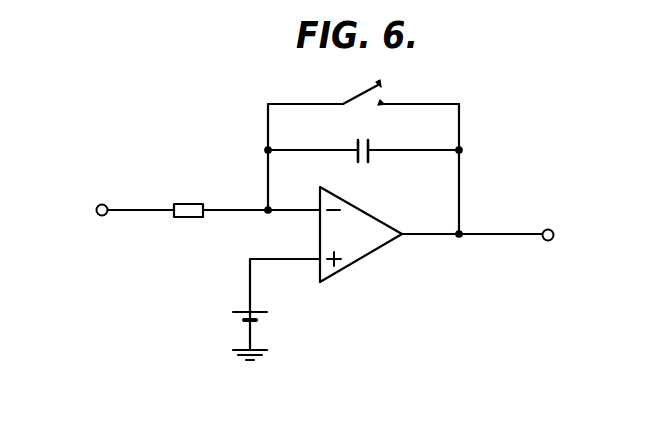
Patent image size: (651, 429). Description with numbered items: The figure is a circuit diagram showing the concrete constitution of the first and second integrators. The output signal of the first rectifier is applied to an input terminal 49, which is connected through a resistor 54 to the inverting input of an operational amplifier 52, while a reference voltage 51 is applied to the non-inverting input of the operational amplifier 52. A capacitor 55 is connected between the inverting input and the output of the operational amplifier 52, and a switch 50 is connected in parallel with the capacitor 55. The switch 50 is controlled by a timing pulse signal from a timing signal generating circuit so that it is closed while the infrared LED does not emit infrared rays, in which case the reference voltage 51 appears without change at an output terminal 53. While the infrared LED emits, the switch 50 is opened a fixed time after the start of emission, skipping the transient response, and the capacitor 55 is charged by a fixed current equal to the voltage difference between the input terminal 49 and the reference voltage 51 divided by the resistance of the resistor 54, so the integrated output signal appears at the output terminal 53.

The input terminal 49 is at (95, 208).
The switch 50 is at (358, 99).
The reference voltage 51 is at (260, 316).
The operational amplifier 52 is at (357, 247).
The output terminal 53 is at (552, 228).
The resistor 54 is at (186, 218).
The capacitor 55 is at (370, 157).